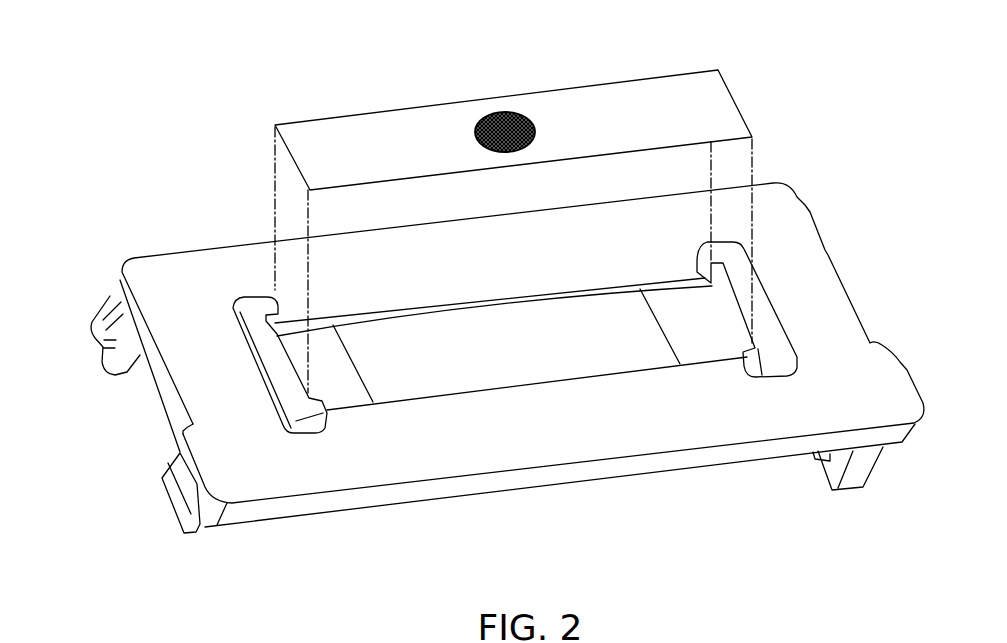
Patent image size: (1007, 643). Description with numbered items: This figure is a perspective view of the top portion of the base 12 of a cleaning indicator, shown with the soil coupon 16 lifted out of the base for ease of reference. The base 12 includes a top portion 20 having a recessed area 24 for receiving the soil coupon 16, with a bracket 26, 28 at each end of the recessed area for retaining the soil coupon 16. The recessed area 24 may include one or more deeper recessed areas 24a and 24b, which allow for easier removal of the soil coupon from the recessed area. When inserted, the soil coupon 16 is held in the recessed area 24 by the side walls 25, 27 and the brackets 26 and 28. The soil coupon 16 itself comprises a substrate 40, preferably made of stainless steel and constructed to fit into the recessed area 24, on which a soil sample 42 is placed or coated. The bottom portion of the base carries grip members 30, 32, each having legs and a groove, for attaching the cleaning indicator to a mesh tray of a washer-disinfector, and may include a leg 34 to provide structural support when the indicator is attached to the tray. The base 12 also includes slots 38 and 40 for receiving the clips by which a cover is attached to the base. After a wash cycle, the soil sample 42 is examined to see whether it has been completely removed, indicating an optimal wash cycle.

The base 12 is at (97, 247).
The soil coupon 16 is at (447, 97).
The top portion 20 is at (207, 272).
The recessed area 24 is at (535, 345).
The deeper recessed area 24a is at (335, 368).
The deeper recessed area 24b is at (700, 328).
The side wall 25 is at (393, 305).
The bracket 26 is at (305, 410).
The side wall 27 is at (487, 393).
The bracket 28 is at (777, 352).
The grip member 30 is at (115, 357).
The grip member 32 is at (857, 470).
The leg 34 is at (170, 503).
The slot 38 is at (163, 385).
The slot 40 is at (365, 159).
The soil sample 42 is at (514, 112).